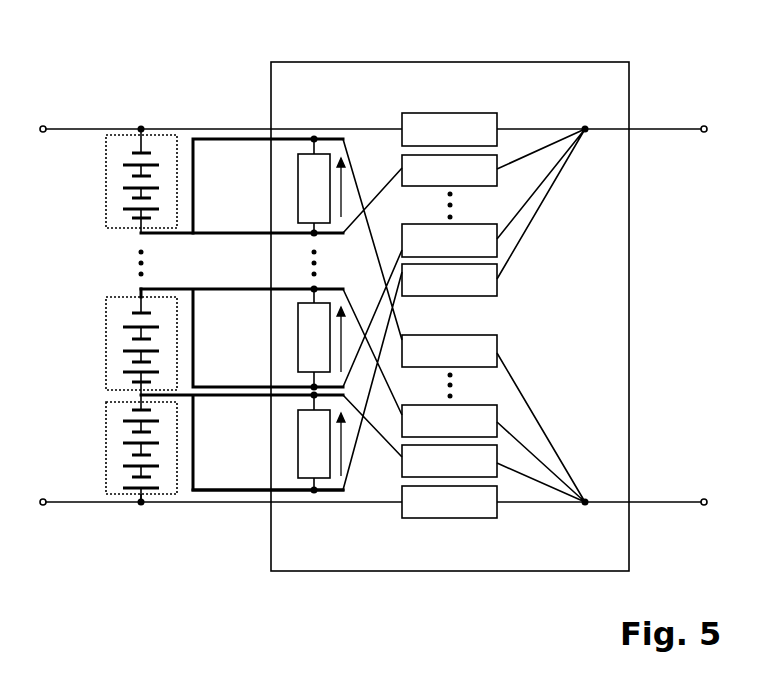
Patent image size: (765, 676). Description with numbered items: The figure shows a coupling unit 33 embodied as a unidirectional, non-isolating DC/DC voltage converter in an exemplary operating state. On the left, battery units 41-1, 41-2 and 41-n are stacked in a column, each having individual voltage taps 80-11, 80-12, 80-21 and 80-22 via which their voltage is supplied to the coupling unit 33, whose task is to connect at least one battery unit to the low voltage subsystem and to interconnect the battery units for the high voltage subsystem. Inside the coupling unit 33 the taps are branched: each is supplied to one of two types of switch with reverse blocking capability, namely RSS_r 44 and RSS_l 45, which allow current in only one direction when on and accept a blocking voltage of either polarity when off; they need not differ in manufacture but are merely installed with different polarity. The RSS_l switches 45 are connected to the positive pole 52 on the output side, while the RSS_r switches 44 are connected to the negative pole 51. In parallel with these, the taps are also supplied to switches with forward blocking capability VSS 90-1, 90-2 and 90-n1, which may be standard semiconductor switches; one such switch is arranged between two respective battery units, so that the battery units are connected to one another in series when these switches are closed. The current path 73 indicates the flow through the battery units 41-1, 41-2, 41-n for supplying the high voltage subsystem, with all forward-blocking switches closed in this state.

The coupling unit 33 is at (521, 62).
The switch with reverse blocking capability RSS_r 44 is at (453, 112).
The switch with reverse blocking capability RSS_l 45 is at (452, 519).
The negative pole 51 is at (704, 125).
The positive pole 52 is at (704, 506).
The current path 73 is at (229, 139).
The battery unit 41-n is at (106, 182).
The battery unit 41-2 is at (106, 343).
The battery unit 41-1 is at (106, 448).
The voltage tap 80-22 is at (141, 293).
The voltage tap 80-21 is at (141, 396).
The voltage tap 80-11 is at (141, 506).
The voltage tap 80-12 is at (232, 492).
The switch with forward blocking capability VSS 90-n1 is at (298, 188).
The switch with forward blocking capability VSS 90-2 is at (298, 338).
The switch with forward blocking capability VSS 90-1 is at (298, 445).